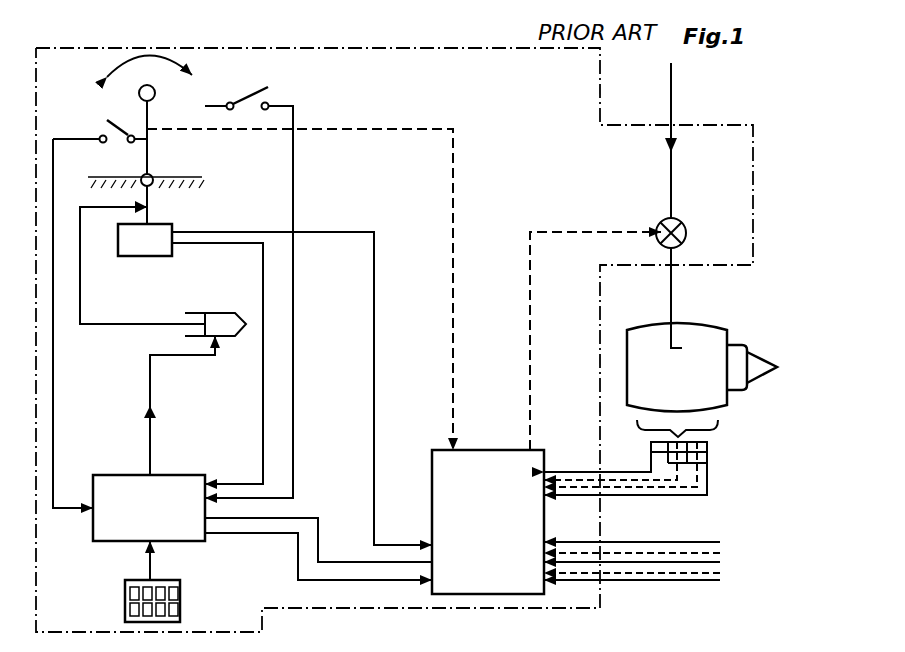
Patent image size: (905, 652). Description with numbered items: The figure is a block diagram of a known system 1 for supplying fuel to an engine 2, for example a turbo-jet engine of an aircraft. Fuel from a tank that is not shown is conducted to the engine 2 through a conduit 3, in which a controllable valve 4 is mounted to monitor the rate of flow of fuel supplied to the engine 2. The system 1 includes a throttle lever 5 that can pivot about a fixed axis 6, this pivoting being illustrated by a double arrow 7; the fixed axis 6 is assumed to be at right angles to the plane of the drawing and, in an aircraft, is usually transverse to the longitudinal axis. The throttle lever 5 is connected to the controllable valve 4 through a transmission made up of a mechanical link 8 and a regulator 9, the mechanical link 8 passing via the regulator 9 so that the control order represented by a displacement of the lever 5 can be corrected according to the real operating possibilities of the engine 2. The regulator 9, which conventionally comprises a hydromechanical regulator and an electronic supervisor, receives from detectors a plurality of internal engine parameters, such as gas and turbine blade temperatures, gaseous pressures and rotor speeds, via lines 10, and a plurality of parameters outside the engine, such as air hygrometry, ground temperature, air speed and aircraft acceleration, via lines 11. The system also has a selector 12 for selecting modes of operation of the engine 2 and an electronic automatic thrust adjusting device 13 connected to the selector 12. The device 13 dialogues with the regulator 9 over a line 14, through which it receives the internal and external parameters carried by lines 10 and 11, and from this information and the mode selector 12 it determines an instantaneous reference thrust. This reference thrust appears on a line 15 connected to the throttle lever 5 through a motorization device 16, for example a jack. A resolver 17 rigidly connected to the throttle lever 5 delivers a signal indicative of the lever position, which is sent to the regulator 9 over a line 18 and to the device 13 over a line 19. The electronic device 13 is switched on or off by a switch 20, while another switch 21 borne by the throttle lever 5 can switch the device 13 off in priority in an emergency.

The system 1 is at (583, 77).
The engine 2 is at (716, 343).
The conduit 3 is at (673, 103).
The controllable valve 4 is at (686, 231).
The throttle lever 5 is at (150, 108).
The fixed axis 6 is at (153, 175).
The double arrow 7 is at (118, 62).
The mechanical link 8 is at (368, 128).
The regulator 9 is at (487, 450).
The lines 10 is at (707, 480).
The lines 11 is at (666, 545).
The selector 12 is at (180, 601).
The electronic automatic thrust adjusting device 13 is at (112, 533).
The line 14 is at (345, 580).
The line 15 is at (148, 438).
The motorization device 16 is at (232, 316).
The resolver 17 is at (128, 257).
The line 18 is at (374, 412).
The line 19 is at (263, 410).
The switch 20 is at (248, 100).
The switch 21 is at (111, 121).